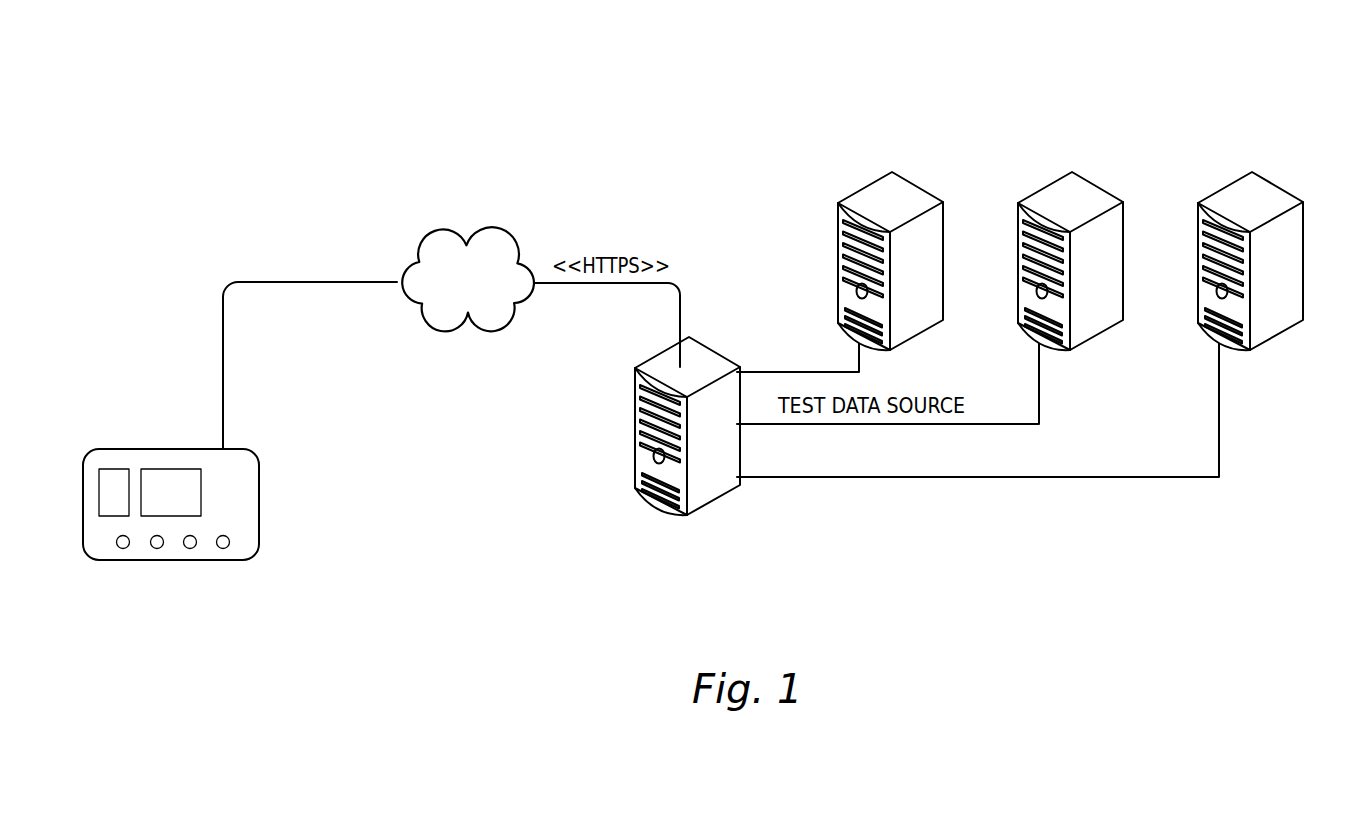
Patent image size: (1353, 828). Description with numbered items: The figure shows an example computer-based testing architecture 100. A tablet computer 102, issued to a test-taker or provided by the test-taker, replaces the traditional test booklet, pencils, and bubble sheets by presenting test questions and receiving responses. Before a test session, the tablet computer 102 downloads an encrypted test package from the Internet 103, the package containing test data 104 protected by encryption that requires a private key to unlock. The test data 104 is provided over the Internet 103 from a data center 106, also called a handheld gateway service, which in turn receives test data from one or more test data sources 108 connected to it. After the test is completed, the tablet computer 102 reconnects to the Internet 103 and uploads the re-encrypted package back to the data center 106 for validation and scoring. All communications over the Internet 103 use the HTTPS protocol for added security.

The computer-based testing architecture 100 is at (208, 91).
The tablet computer 102 is at (155, 449).
The Internet 103 is at (496, 228).
The test data 104 is at (300, 226).
The data center (handheld gateway service) 106 is at (635, 417).
The test data source 108 is at (894, 200).